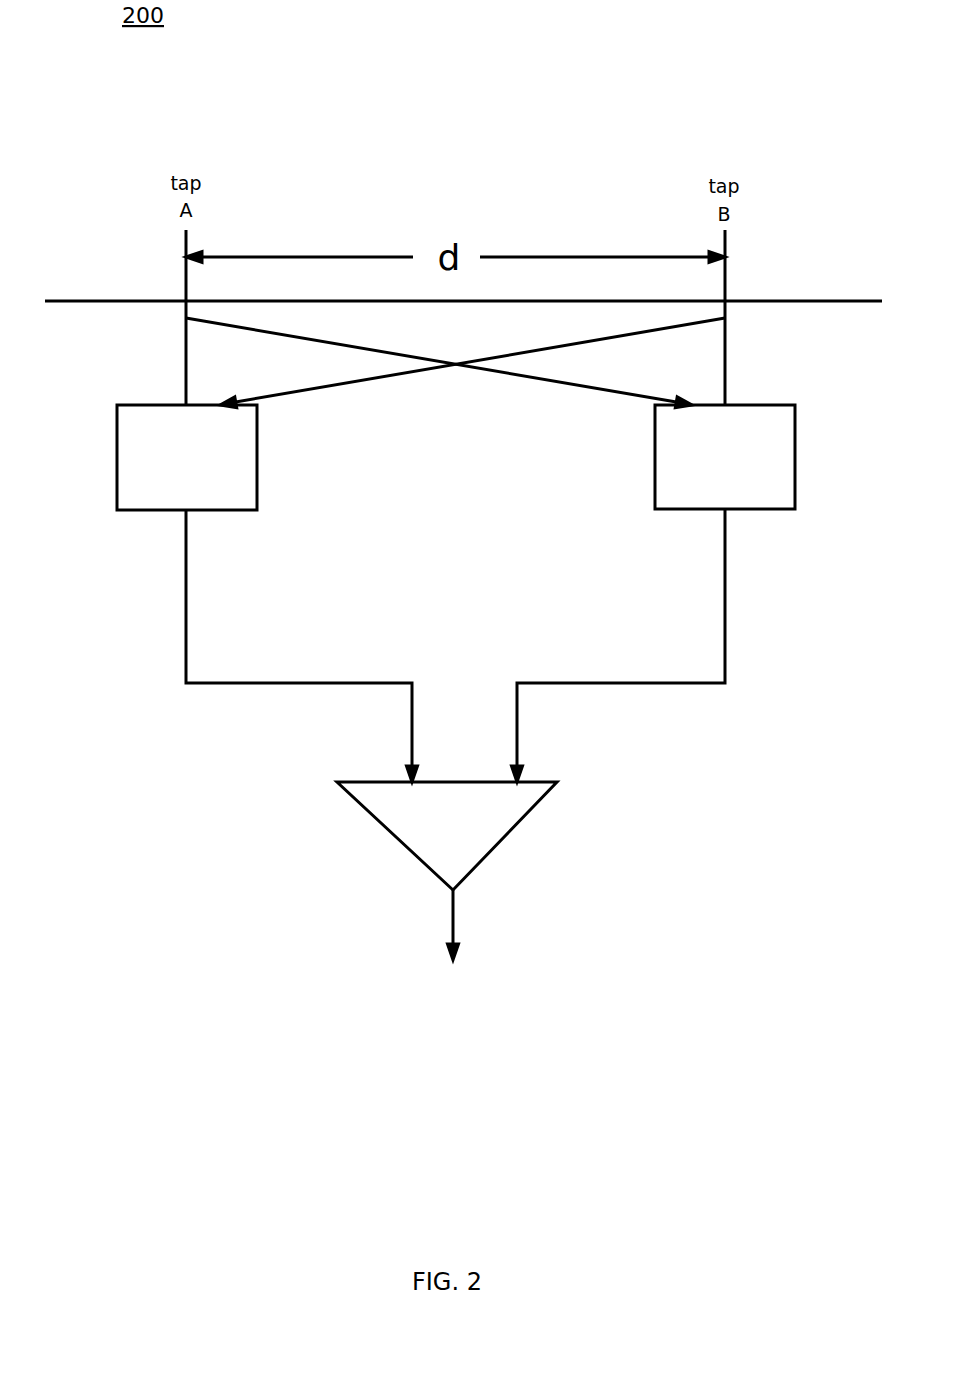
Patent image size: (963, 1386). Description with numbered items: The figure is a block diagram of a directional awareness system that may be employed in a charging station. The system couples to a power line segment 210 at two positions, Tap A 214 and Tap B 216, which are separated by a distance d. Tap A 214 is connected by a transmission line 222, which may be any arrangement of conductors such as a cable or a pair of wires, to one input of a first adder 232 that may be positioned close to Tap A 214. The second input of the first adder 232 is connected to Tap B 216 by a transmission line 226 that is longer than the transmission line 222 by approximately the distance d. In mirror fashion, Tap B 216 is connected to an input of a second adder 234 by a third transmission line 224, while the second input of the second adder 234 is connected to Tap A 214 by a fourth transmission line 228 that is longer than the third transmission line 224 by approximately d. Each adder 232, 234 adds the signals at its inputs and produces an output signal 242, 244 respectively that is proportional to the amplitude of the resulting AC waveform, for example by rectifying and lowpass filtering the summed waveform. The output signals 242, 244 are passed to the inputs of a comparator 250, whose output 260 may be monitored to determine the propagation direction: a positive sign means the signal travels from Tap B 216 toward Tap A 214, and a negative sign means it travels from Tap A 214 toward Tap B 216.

The power line segment 210 is at (66, 300).
The Tap A 214 is at (184, 300).
The Tap B 216 is at (733, 300).
The transmission line 222 is at (184, 360).
The third transmission line 224 is at (728, 355).
The transmission line 226 is at (357, 374).
The fourth transmission line 228 is at (583, 376).
The first adder 232 is at (187, 457).
The second adder 234 is at (725, 457).
The output signal 242 is at (258, 685).
The output signal 244 is at (672, 685).
The comparator 250 is at (447, 836).
The output 260 is at (448, 904).